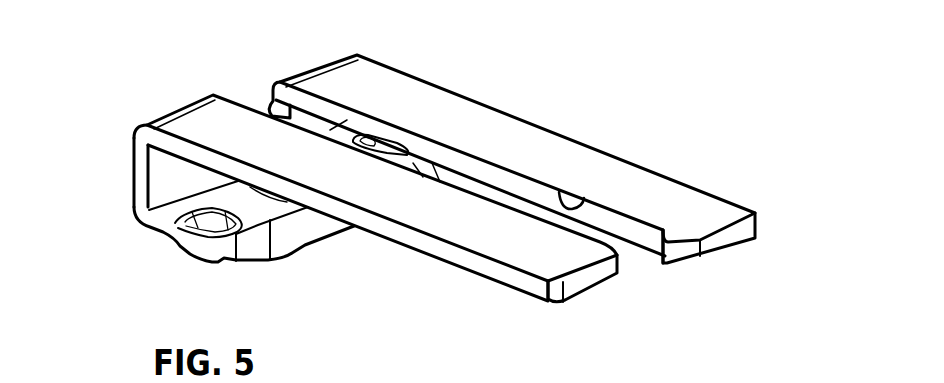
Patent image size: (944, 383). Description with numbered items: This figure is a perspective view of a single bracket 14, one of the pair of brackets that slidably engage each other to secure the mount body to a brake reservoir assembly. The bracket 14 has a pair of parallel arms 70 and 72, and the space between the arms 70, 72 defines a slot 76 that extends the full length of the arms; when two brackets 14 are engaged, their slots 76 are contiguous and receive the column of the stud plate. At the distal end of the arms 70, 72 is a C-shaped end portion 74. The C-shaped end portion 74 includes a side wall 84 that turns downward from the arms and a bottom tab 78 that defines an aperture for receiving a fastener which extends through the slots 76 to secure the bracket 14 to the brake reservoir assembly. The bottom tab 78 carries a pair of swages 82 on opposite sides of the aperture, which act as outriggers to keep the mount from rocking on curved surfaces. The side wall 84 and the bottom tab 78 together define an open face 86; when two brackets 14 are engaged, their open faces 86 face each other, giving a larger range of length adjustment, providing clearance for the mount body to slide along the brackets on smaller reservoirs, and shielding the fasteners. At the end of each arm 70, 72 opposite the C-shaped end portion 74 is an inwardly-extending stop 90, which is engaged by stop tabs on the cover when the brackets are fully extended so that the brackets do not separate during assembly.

The bracket 14 is at (580, 140).
The arm 70 is at (350, 72).
The arm 72 is at (183, 124).
The C-shaped end portion 74 is at (140, 142).
The slot 76 is at (573, 207).
The bottom tab 78 is at (255, 228).
The swage 82 is at (203, 230).
The side wall 84 is at (134, 193).
The open face 86 is at (282, 218).
The stop 90 is at (610, 243).